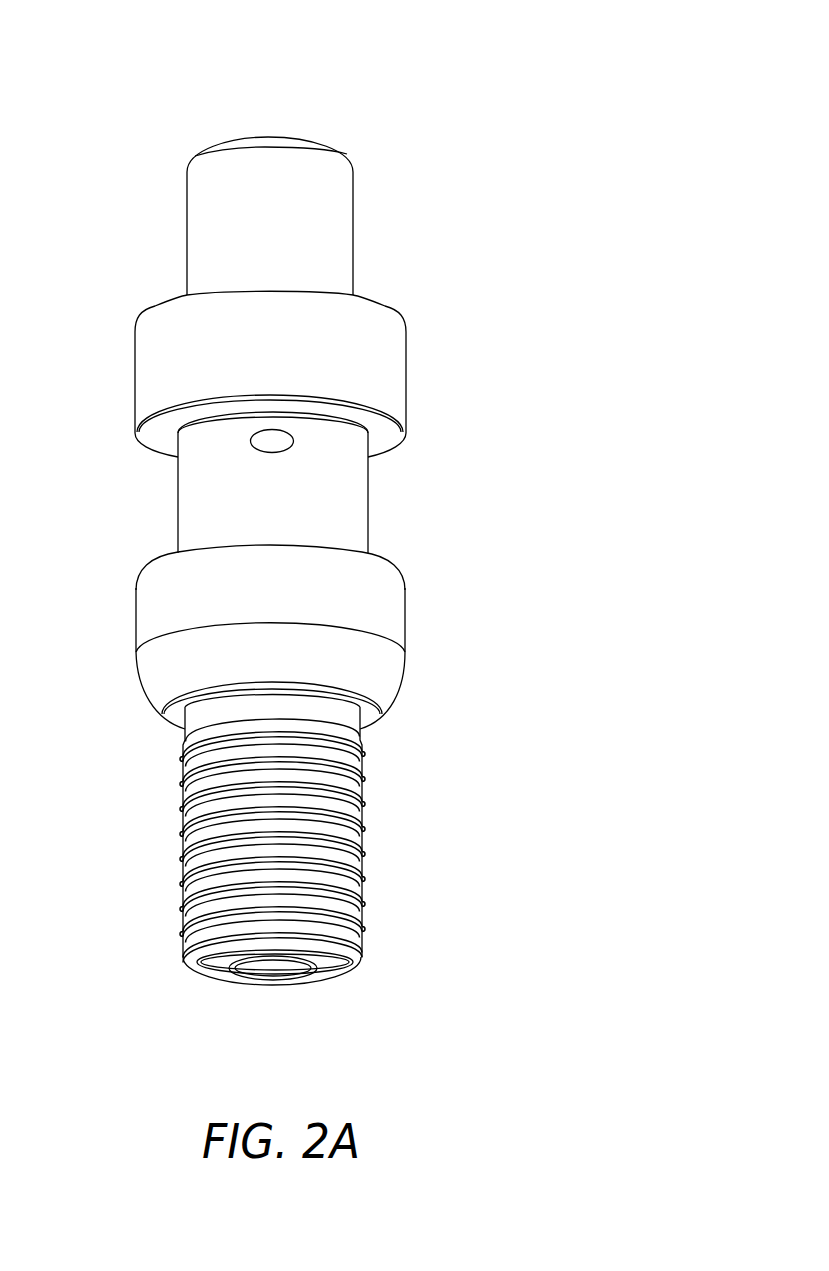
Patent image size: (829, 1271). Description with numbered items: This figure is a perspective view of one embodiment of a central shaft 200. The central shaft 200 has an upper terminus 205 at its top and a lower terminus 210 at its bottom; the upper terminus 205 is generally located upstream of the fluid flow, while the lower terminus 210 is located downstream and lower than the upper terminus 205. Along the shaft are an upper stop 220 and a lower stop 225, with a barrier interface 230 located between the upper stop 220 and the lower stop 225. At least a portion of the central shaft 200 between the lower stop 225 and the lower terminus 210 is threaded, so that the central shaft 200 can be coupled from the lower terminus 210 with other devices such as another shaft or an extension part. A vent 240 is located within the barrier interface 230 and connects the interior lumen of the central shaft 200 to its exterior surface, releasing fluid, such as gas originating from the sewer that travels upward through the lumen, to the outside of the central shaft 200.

The central shaft 200 is at (561, 78).
The upper terminus 205 is at (337, 149).
The lower terminus 210 is at (352, 958).
The upper stop 220 is at (401, 384).
The lower stop 225 is at (400, 620).
The barrier interface 230 is at (360, 513).
The vent 240 is at (250, 445).